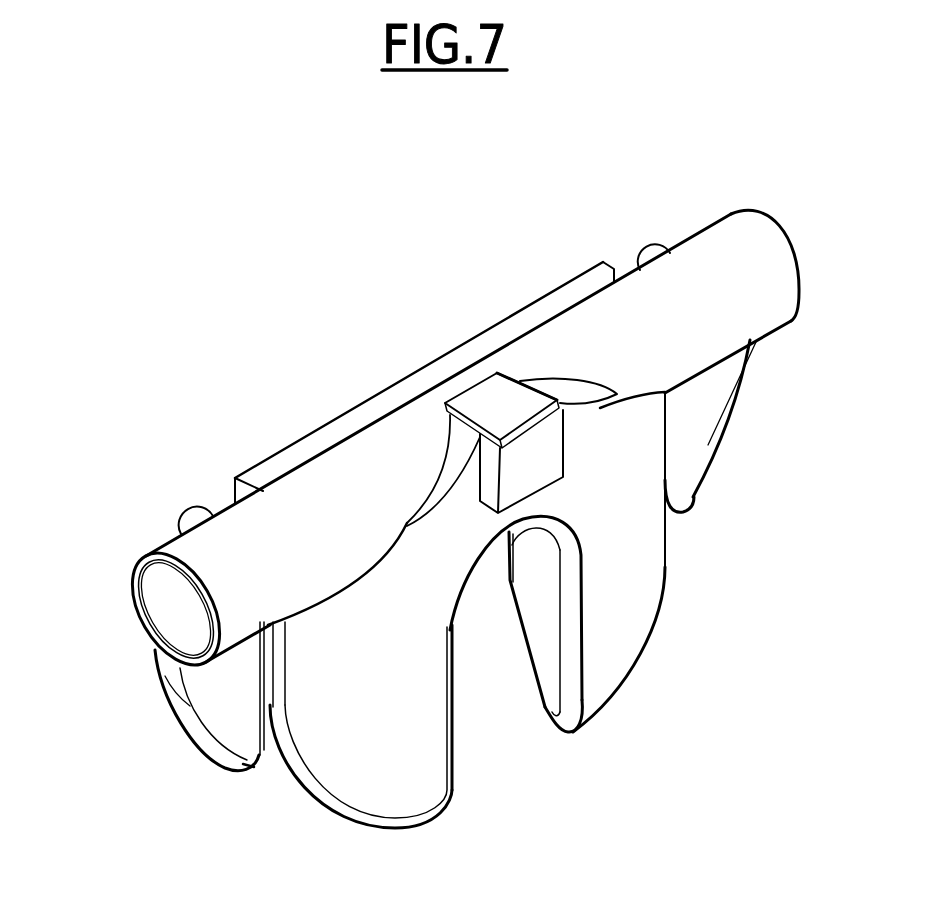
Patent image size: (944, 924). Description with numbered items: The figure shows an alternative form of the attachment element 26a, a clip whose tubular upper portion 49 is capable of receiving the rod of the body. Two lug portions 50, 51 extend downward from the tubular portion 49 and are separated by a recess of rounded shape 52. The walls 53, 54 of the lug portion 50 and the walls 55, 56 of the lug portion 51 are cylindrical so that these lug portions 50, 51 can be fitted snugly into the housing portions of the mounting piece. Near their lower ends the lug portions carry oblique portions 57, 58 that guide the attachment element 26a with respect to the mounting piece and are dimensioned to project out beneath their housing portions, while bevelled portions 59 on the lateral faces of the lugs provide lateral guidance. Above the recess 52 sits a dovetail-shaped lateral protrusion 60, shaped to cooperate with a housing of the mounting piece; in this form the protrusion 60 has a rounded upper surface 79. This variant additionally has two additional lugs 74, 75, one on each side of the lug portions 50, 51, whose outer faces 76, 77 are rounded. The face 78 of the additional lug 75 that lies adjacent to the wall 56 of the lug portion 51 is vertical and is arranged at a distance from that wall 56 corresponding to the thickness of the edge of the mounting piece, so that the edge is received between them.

The attachment element 26a is at (164, 479).
The tubular upper portion 49 is at (313, 533).
The lug portion 50 is at (613, 637).
The lug portion 51 is at (408, 717).
The recess of rounded shape 52 is at (470, 572).
The wall of lug portion 53 is at (667, 473).
The wall of lug portion 54 is at (535, 605).
The wall of lug portion 55 is at (455, 714).
The wall of lug portion 56 is at (267, 745).
The oblique portion 57 is at (653, 630).
The oblique portion 58 is at (345, 805).
The bevelled portion 59 is at (537, 692).
The lateral protrusion 60 is at (545, 455).
The additional lug 74 is at (687, 448).
The additional lug 75 is at (258, 698).
The outer face of additional lug 76 is at (726, 431).
The outer face of additional lug 77 is at (222, 690).
The face of additional lug 78 is at (202, 735).
The rounded upper surface 79 is at (498, 413).